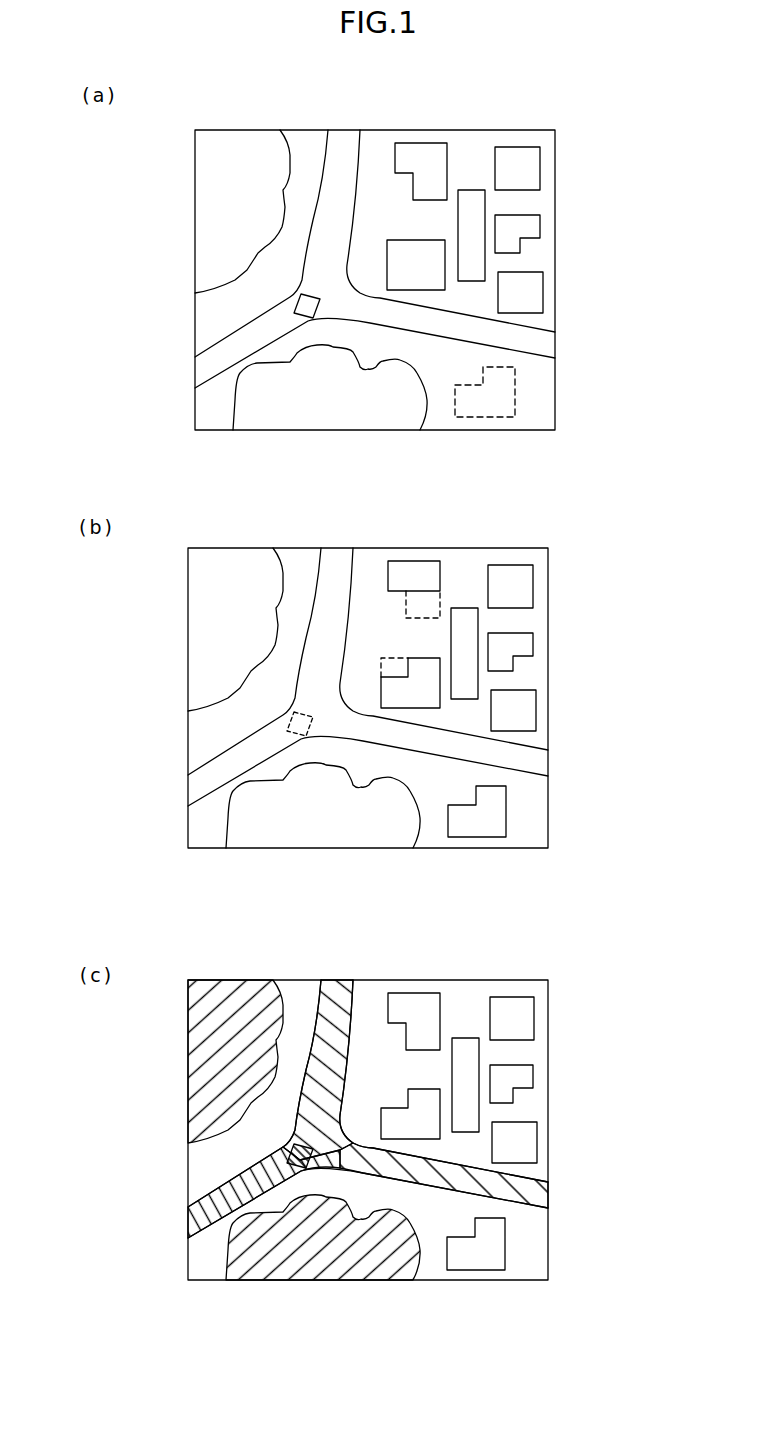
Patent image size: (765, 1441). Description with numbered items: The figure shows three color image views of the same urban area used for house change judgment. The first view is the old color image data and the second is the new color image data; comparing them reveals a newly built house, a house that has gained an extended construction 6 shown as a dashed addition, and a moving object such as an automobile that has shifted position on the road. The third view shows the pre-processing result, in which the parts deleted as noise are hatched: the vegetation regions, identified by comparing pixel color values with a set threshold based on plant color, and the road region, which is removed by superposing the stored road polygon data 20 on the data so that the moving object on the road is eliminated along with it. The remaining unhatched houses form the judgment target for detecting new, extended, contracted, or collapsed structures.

The extended construction 6 is at (405, 603).
The road polygon data 20 is at (342, 990).